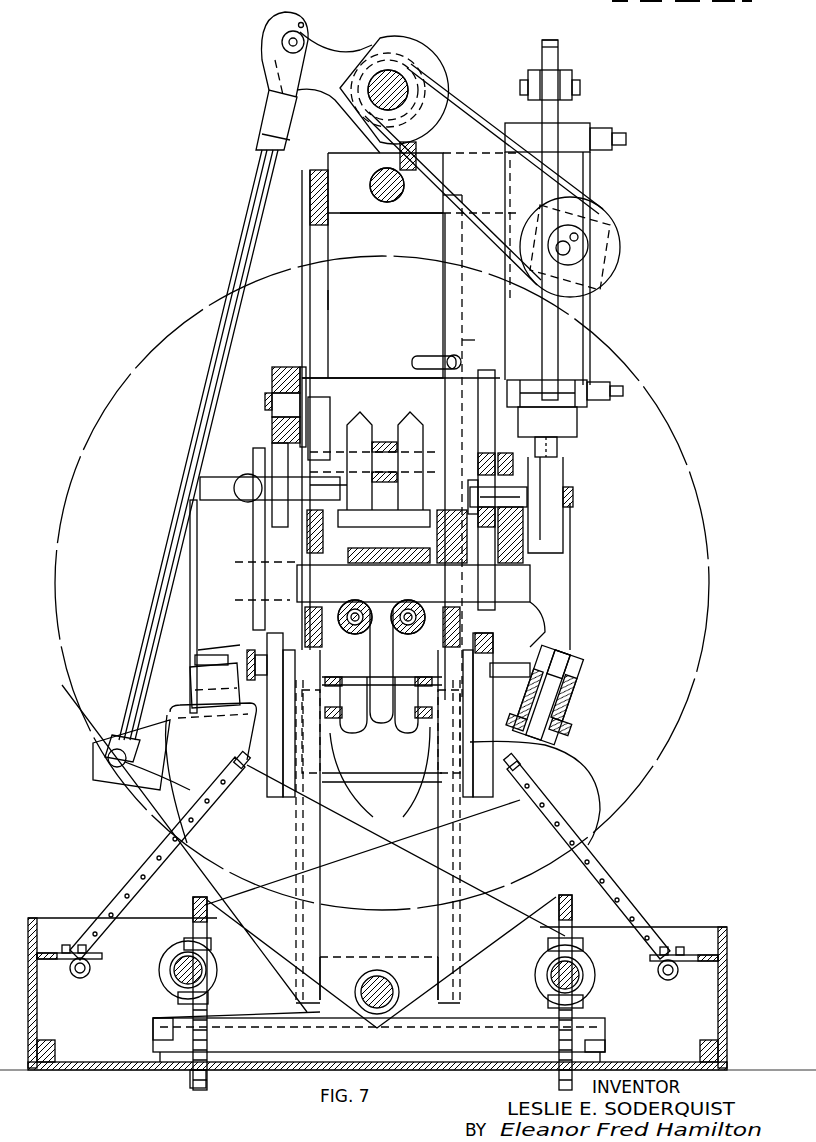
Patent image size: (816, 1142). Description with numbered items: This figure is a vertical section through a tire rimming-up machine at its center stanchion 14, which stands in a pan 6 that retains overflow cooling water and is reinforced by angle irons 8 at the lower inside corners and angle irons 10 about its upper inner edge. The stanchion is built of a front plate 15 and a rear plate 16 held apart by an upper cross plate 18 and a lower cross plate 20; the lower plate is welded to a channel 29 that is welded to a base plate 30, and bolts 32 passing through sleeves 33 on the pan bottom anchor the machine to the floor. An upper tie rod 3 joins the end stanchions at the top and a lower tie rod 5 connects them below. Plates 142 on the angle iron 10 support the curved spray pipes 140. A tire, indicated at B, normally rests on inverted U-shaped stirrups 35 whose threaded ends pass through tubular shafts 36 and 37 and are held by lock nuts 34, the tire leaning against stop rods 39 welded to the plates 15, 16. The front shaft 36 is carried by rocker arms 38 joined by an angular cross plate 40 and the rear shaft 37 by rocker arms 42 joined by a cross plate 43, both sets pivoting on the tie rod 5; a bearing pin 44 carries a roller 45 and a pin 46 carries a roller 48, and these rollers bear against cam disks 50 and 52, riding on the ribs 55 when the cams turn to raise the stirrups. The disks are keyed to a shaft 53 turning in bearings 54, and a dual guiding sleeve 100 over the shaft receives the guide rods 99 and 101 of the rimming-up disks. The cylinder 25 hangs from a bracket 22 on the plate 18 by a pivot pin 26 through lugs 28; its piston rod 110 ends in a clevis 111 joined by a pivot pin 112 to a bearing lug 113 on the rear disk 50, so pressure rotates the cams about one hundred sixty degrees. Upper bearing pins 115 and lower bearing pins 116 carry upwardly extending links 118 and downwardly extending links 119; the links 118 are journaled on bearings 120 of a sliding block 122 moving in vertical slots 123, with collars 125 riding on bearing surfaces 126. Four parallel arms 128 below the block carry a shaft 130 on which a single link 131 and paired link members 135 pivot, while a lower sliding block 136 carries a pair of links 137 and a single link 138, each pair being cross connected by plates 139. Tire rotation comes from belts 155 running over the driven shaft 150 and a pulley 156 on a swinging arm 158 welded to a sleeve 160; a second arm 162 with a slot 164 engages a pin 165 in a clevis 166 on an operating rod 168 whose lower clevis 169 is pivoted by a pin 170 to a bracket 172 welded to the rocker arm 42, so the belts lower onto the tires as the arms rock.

The tire outline B is at (664, 405).
The upper longitudinal tie rod 3 is at (392, 192).
The lower longitudinal tie rod 5 is at (385, 985).
The pan 6 is at (727, 1002).
The angle irons 8 is at (730, 1052).
The angle irons 10 is at (37, 925).
The center stanchion 14 is at (300, 249).
The front plate 15 is at (323, 318).
The rear plate 16 is at (463, 345).
The cross plate 18 is at (358, 200).
The cross plate 20 is at (355, 957).
The bracket 22 is at (553, 115).
The operating cylinder 25 is at (592, 320).
The pivot pin 26 is at (580, 88).
The lugs 28 is at (565, 70).
The third channel 29 is at (262, 1040).
The base plate 30 is at (305, 1055).
The bolts 32 is at (186, 1082).
The sleeves 33 is at (602, 1052).
The lock nuts 34 is at (210, 996).
The stirrups 35 is at (208, 903).
The front tubular shaft 36 is at (172, 975).
The rear tubular shaft 37 is at (592, 978).
The rocker arms 38 is at (598, 808).
The stop rods 39 is at (422, 358).
The angular cross plate 40 is at (575, 722).
The rocker arms 42 is at (200, 872).
The angular cross plate 43 is at (180, 726).
The bearing pin 44 is at (556, 652).
The cam follower 45 is at (562, 692).
The pin 46 is at (205, 650).
The cam follower 48 is at (210, 682).
The cam disk 50 is at (528, 628).
The cam disk 52 is at (252, 532).
The shaft 53 is at (527, 592).
The bearings 54 is at (415, 612).
The rib 55 is at (190, 582).
The guide rod 99 is at (410, 637).
The dual guiding sleeve 100 is at (437, 556).
The guide rod 101 is at (352, 637).
The piston rod 110 is at (558, 447).
The clevis 111 is at (532, 480).
The pivot pin 112 is at (576, 496).
The bearing lug 113 is at (552, 540).
The upper bearing pin 115 is at (247, 652).
The lower bearing pin 116 is at (236, 488).
The upwardly extending link 118 is at (280, 428).
The downwardly extending link 119 is at (283, 723).
The bearings 120 is at (268, 400).
The sliding block 122 is at (395, 378).
The vertical slots 123 is at (465, 232).
The collars 125 is at (304, 372).
The bearing surfaces 126 is at (320, 300).
The spaced parallel arms 128 is at (435, 440).
The shaft 130 is at (392, 470).
The single link 131 is at (345, 487).
The parallel link members 135 is at (350, 530).
The sliding block 136 is at (396, 782).
The pair of links 137 is at (398, 800).
The single link 138 is at (378, 712).
The plates 139 is at (340, 518).
The sprays 140 is at (140, 892).
The plates 142 is at (55, 960).
The constantly driven shaft 150 is at (400, 85).
The belts 155 is at (498, 118).
The pulley 156 is at (602, 230).
The swinging arm 158 is at (470, 137).
The long sleeve 160 is at (398, 43).
The arms 162 is at (355, 52).
The slot 164 is at (304, 26).
The pin 165 is at (282, 42).
The clevis 166 is at (272, 122).
The long operating rod 168 is at (235, 238).
The clevis 169 is at (120, 748).
The pin 170 is at (108, 756).
The bracket 172 is at (140, 790).